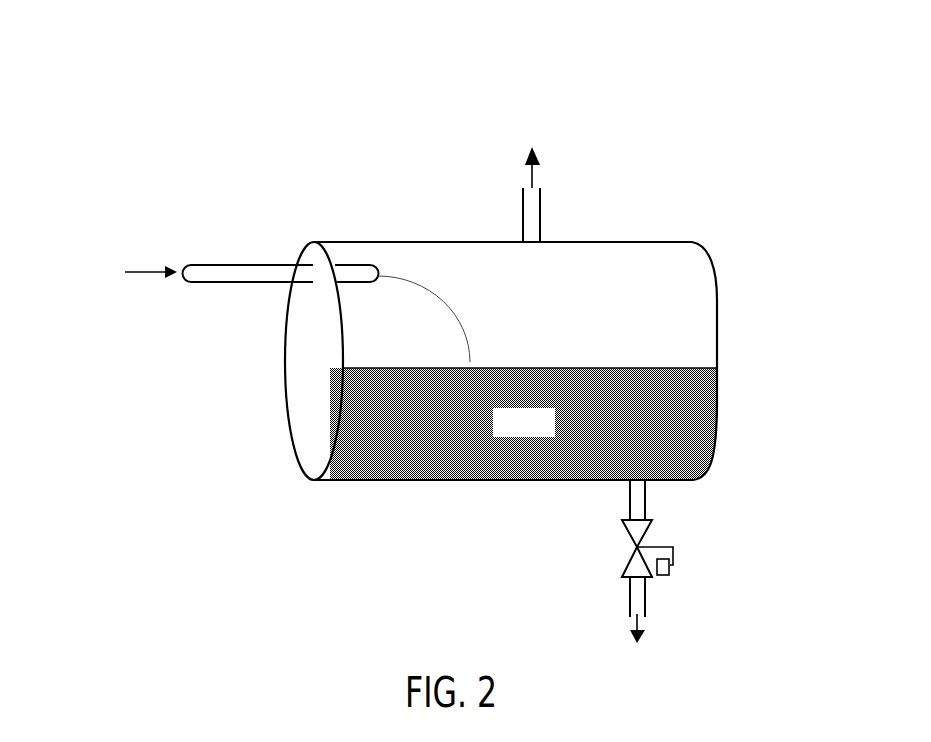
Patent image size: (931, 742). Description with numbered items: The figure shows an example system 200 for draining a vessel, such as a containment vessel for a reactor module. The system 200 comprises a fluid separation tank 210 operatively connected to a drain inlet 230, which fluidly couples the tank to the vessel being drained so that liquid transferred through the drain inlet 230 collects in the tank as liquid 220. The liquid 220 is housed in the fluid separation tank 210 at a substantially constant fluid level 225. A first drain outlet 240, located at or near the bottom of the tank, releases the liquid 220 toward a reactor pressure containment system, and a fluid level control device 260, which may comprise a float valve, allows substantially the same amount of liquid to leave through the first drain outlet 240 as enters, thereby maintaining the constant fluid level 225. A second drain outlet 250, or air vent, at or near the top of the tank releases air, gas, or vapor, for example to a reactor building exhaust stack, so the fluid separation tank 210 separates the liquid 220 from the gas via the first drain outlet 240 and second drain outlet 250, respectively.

The system 200 is at (680, 84).
The fluid separation tank 210 is at (425, 242).
The liquid 220 is at (543, 430).
The constant fluid level 225 is at (640, 366).
The drain inlet 230 is at (221, 283).
The first drain outlet 240 is at (647, 493).
The second drain outlet 250 is at (523, 207).
The fluid level control device 260 is at (702, 568).